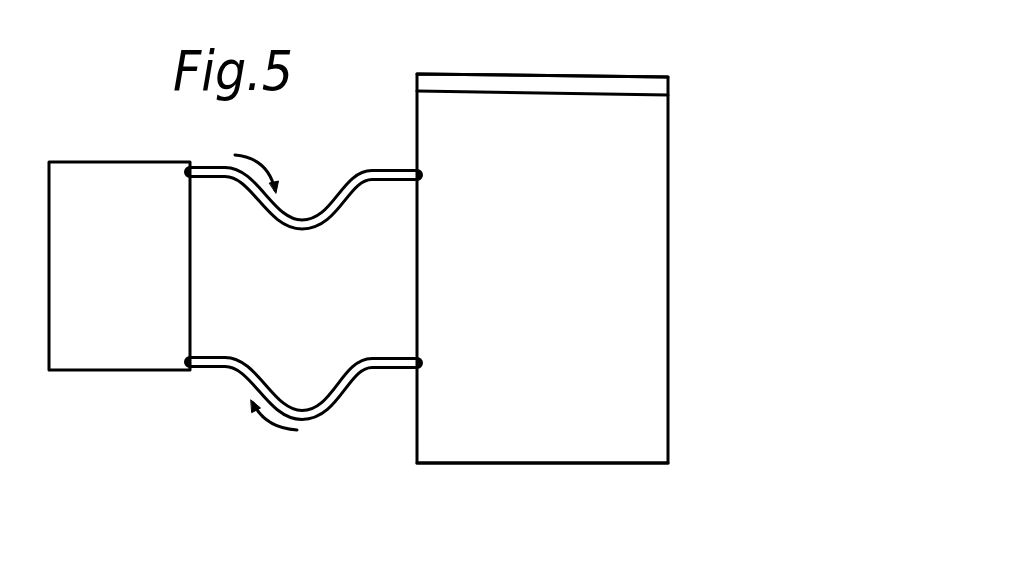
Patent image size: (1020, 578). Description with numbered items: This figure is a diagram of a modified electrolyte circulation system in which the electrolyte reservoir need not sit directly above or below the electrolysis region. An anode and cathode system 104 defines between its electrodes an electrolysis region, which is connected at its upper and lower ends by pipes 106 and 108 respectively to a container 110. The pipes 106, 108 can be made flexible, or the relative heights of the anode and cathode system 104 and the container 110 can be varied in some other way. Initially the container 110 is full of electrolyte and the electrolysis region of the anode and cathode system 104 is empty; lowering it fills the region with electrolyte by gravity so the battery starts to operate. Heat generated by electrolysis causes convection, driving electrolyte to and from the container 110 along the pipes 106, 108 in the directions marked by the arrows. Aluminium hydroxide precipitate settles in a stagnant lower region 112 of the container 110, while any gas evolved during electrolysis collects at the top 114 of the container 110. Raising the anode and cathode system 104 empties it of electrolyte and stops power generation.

The anode and cathode system 104 is at (127, 357).
The pipe 106 is at (338, 218).
The pipe 108 is at (270, 390).
The container 110 is at (645, 260).
The stagnant lower region 112 is at (602, 445).
The top of the container 114 is at (583, 83).